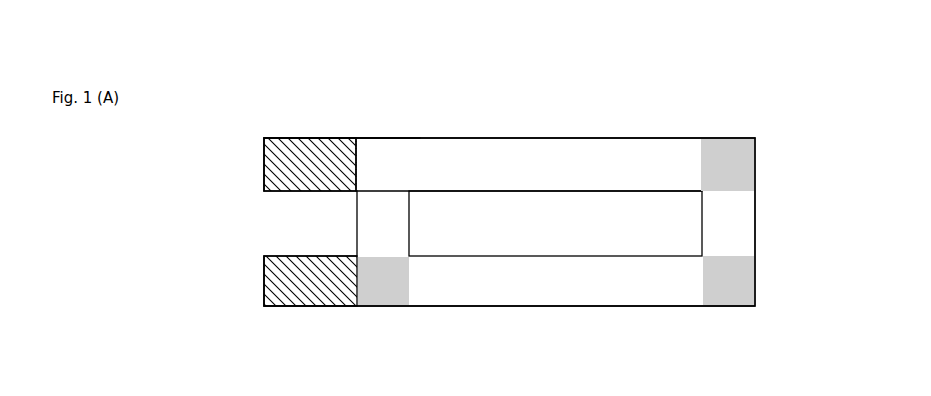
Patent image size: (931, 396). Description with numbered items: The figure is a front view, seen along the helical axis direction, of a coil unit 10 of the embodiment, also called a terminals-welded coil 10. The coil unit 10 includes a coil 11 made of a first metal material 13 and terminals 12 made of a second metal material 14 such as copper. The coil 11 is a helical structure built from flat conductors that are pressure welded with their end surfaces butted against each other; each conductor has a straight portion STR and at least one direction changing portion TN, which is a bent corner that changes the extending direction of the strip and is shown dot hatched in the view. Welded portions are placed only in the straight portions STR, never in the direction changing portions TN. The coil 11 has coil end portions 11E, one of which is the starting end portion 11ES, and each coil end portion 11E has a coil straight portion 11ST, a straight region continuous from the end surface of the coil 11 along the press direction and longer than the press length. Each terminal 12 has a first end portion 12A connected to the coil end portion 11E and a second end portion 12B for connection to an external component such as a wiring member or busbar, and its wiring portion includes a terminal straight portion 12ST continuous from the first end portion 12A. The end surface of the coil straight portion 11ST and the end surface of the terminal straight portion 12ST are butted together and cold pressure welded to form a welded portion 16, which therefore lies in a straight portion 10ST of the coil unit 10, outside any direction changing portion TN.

The coil unit 10 is at (769, 79).
The straight portion 10ST is at (347, 135).
The coil 11 is at (509, 192).
The first metal material 13 is at (600, 152).
The coil straight portion 11ST is at (400, 137).
The coil end portion 11E is at (531, 209).
The starting end portion 11ES is at (360, 162).
The terminal 12 is at (289, 237).
The second metal material 14 is at (277, 140).
The first end portion 12A is at (352, 170).
The second end portion 12B is at (262, 160).
The terminal straight portion 12ST is at (317, 117).
The welded portion 16 is at (360, 137).
The direction changing portion TN is at (731, 138).
The straight portion STR is at (757, 217).